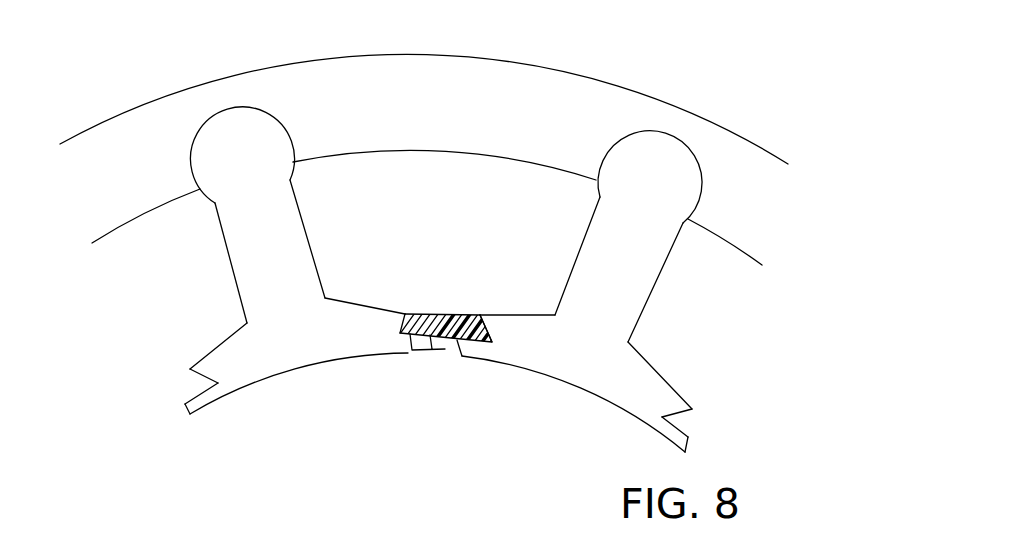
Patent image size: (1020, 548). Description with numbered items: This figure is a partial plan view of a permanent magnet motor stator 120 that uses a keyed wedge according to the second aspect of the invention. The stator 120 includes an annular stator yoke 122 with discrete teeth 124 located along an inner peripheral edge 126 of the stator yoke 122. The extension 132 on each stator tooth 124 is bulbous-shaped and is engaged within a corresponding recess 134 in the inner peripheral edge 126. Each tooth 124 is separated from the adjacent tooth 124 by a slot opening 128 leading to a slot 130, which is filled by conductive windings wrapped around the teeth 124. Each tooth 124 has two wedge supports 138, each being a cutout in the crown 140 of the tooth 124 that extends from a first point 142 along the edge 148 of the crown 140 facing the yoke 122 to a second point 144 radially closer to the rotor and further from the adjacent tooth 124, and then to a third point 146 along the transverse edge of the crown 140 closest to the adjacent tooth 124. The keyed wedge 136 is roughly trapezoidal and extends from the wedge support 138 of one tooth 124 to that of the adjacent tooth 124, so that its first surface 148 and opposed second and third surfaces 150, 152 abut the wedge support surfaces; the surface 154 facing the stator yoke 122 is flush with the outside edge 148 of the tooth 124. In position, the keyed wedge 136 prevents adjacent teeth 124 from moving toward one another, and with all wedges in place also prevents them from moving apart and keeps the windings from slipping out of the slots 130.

The partial stator 120 is at (418, 28).
The stator yoke 122 is at (510, 75).
The stator tooth 124 is at (233, 247).
The inner peripheral edge 126 is at (342, 153).
The slot opening 128 is at (447, 358).
The slot 130 is at (541, 175).
The extension 132 is at (213, 127).
The recess 134 is at (257, 125).
The keyed wedge 136 is at (450, 315).
The wedge support 138 is at (174, 383).
The crown 140 is at (265, 358).
The first point 142 is at (480, 318).
The second point 144 is at (492, 340).
The third point 146 is at (462, 355).
The edge of the crown 148 is at (520, 318).
The second surface 150 is at (400, 328).
The third surface 152 is at (488, 330).
The surface of the keyed wedge 154 is at (420, 310).